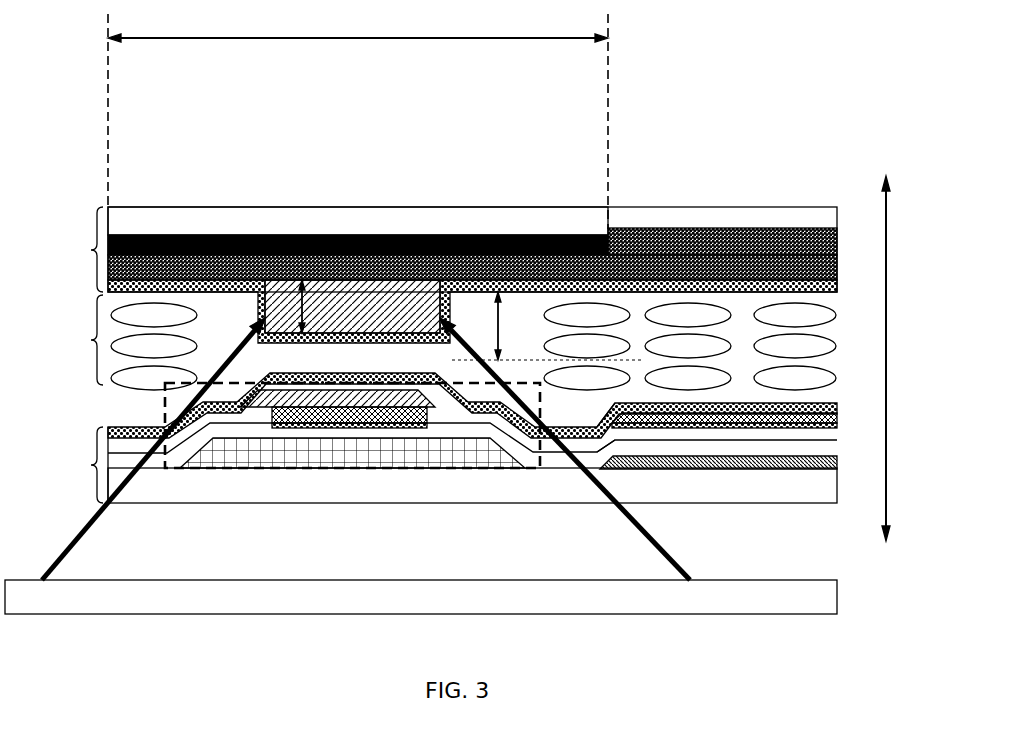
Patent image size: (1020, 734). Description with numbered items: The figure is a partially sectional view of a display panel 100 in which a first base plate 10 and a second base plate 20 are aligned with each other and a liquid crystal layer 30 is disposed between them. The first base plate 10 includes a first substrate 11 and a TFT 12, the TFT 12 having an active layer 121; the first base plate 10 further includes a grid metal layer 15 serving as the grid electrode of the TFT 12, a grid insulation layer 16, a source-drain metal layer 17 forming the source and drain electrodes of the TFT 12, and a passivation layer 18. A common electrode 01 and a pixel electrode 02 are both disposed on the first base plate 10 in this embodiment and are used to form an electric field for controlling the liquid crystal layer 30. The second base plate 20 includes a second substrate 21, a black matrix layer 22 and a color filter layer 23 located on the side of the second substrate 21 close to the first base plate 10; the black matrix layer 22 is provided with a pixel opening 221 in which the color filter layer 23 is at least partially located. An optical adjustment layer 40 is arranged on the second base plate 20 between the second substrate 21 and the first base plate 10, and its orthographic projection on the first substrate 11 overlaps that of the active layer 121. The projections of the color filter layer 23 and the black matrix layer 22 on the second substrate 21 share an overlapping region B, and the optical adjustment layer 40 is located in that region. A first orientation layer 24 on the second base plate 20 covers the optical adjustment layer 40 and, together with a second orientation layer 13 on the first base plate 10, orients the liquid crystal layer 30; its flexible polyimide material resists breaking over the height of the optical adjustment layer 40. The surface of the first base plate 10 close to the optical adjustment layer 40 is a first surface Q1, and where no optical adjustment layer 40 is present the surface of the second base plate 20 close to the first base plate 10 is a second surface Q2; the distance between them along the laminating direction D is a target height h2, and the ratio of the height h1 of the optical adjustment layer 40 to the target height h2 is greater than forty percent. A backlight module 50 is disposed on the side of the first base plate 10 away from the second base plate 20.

The display panel 100 is at (797, 90).
The first base plate 10 is at (84, 465).
The first substrate 11 is at (690, 487).
The TFT 12 is at (237, 467).
The second orientation layer 13 is at (585, 430).
The grid metal layer 15 is at (297, 472).
The active layer 121 is at (340, 428).
The grid insulation layer 16 is at (555, 465).
The source-drain metal layer 17 is at (385, 410).
The passivation layer 18 is at (570, 447).
The common electrode 01 is at (723, 465).
The pixel electrode 02 is at (762, 423).
The second base plate 20 is at (448, 249).
The second substrate 21 is at (195, 227).
The black matrix layer 22 is at (290, 235).
The pixel opening 221 is at (732, 229).
The color filter layer 23 is at (368, 233).
The first orientation layer 24 is at (512, 290).
The liquid crystal layer 30 is at (448, 342).
The optical adjustment layer 40 is at (398, 300).
The backlight module 50 is at (445, 605).
The overlapping region B is at (358, 121).
The laminating direction D is at (877, 358).
The height of the optical adjustment layer h1 is at (319, 306).
The target height h2 is at (547, 326).
The first surface Q1 is at (282, 357).
The second surface Q2 is at (563, 293).